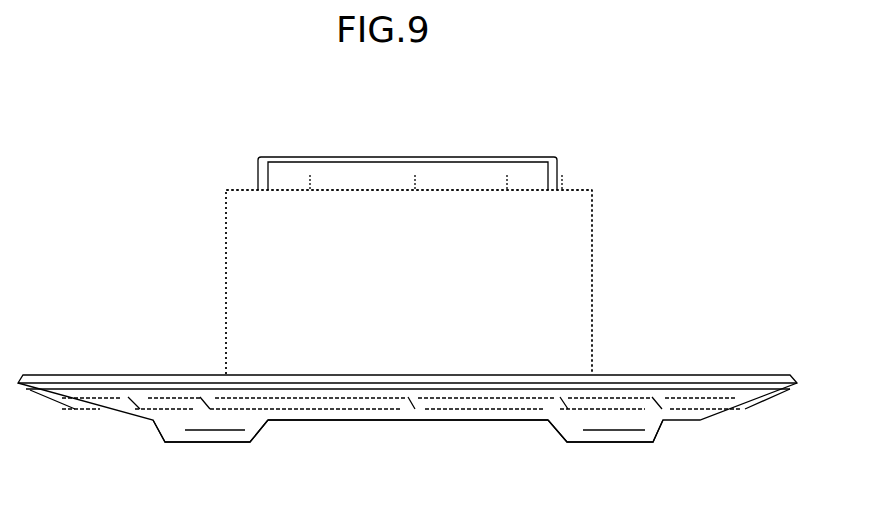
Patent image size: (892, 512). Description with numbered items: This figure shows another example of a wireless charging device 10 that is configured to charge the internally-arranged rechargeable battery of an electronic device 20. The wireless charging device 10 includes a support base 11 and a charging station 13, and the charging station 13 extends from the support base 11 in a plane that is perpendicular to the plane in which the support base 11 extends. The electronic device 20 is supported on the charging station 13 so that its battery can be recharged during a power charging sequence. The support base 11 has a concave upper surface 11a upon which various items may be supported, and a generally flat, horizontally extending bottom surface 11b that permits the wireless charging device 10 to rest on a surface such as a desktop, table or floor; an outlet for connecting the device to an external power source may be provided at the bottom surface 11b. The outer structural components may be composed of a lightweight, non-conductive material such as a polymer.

The wireless charging device 10 is at (120, 168).
The support base 11 is at (755, 388).
The concave upper surface 11a is at (210, 425).
The bottom surface 11b is at (362, 432).
The charging station 13 is at (510, 180).
The electronic device 20 is at (265, 292).